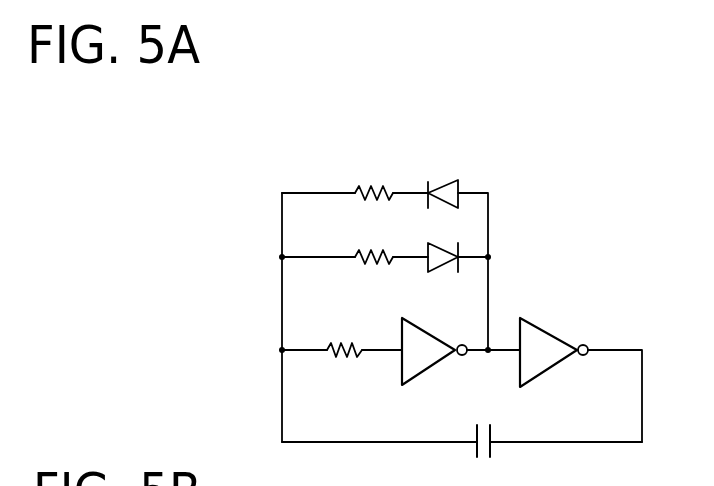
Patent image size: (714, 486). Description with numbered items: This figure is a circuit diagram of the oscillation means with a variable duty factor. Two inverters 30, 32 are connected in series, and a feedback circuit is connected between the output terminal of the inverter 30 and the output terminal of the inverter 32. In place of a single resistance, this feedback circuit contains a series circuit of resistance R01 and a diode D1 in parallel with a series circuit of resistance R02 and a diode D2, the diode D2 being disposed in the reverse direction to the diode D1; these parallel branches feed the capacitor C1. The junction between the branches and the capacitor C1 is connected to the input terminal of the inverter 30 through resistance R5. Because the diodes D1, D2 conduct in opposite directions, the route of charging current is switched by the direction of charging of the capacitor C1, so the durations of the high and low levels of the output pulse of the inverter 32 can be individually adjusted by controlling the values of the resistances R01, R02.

The resistance R01 is at (369, 185).
The diode D1 is at (442, 180).
The resistance R02 is at (365, 249).
The diode D2 is at (428, 246).
The resistance R5 is at (348, 355).
The inverter 30 is at (433, 365).
The inverter 32 is at (552, 367).
The capacitor C1 is at (490, 452).